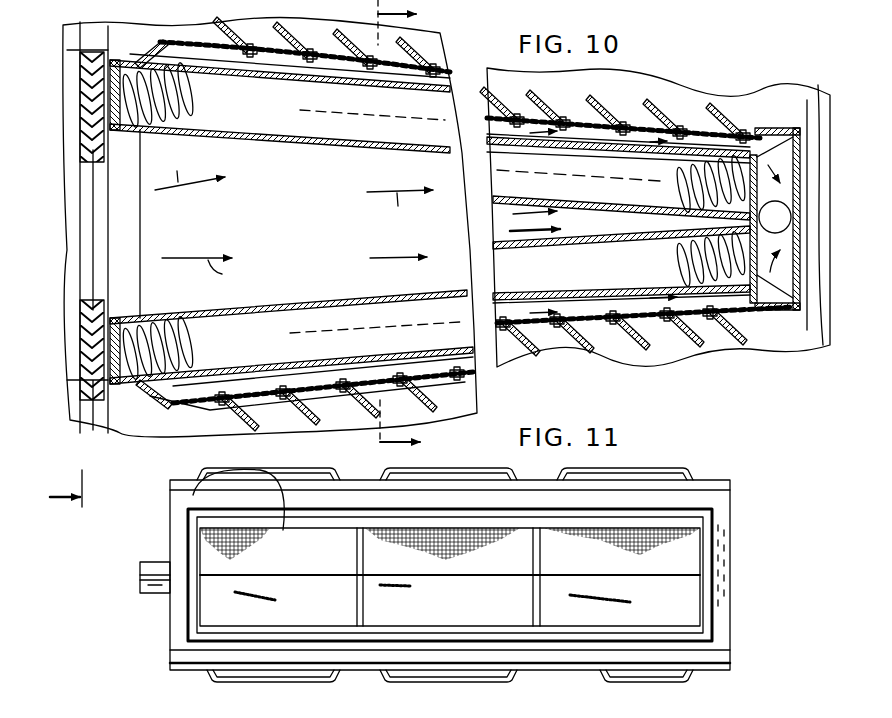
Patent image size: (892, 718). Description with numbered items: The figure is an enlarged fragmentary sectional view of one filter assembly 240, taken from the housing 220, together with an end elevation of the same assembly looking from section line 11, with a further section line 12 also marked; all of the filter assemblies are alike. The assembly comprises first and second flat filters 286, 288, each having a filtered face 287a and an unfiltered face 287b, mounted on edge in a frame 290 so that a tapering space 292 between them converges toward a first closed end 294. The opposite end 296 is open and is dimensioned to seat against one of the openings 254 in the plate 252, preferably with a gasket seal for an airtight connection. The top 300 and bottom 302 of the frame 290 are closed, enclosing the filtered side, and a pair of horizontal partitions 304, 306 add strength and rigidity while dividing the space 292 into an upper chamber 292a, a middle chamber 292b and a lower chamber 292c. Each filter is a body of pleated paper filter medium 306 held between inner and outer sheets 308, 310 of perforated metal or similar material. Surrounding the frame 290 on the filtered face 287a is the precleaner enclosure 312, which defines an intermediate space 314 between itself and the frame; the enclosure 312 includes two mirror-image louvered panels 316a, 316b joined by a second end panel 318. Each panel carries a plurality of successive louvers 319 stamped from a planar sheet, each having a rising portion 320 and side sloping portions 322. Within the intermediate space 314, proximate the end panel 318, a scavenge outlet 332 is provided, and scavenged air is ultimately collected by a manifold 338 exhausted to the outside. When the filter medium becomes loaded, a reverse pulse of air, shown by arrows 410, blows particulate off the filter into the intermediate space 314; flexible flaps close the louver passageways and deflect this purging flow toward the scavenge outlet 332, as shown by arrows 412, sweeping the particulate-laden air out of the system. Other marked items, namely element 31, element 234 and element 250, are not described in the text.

In FIG. 11, the section line 11— 11 is at (70, 503).
In FIG. 10, the section line 12— 12 is at (420, 229).
In FIG. 11, the mounting foot 31 is at (692, 673).
In FIG. 10, the housing 220 is at (686, 353).
In FIG. 10, the housing wall 234 is at (648, 9).
In FIG. 10, the filter assembly 240 is at (757, 240).
In FIG. 11, the filter assembly 240 is at (733, 477).
In FIG. 10, the outer wall 250 is at (808, 205).
In FIG. 10, the plate 252 is at (110, 312).
In FIG. 10, the opening 254 is at (88, 247).
In FIG. 10, the first flat filter 286 is at (337, 150).
In FIG. 10, the filtered face 287a is at (306, 150).
In FIG. 11, the filtered face 287a is at (213, 550).
In FIG. 10, the unfiltered face 287b is at (597, 145).
In FIG. 10, the second flat filter 288 is at (313, 307).
In FIG. 10, the frame 290 is at (760, 128).
In FIG. 10, the tapering space 292 is at (313, 247).
In FIG. 11, the upper chamber 292a is at (680, 550).
In FIG. 11, the middle chamber 292b is at (437, 557).
In FIG. 11, the lower chamber 292c is at (237, 547).
In FIG. 10, the first closed end 294 is at (770, 268).
In FIG. 11, the opposite end 296 is at (180, 522).
In FIG. 11, the top 300 is at (730, 567).
In FIG. 11, the bottom 302 is at (170, 640).
In FIG. 11, the horizontal partition 304 is at (533, 555).
In FIG. 10, the pleated paper filter medium 306 is at (193, 111).
In FIG. 11, the pleated paper filter medium 306 is at (340, 557).
In FIG. 10, the inner sheet 308 is at (433, 150).
In FIG. 10, the outer sheet 310 is at (423, 88).
In FIG. 10, the precleaner enclosure 312 is at (190, 413).
In FIG. 11, the precleaner enclosure 312 is at (705, 473).
In FIG. 10, the intermediate space 314 is at (200, 392).
In FIG. 10, the louvered panel 316a is at (183, 38).
In FIG. 10, the louvered panel 316b is at (163, 402).
In FIG. 10, the second end panel 318 is at (805, 285).
In FIG. 10, the louver 319 is at (285, 38).
In FIG. 11, the louver 319 is at (213, 681).
In FIG. 10, the rising portion 320 is at (527, 107).
In FIG. 11, the rising portion 320 is at (227, 547).
In FIG. 10, the side sloping portion 322 is at (500, 63).
In FIG. 11, the side sloping portion 322 is at (510, 670).
In FIG. 10, the scavenge outlet 332 is at (673, 262).
In FIG. 11, the scavenge outlet 332 is at (140, 587).
In FIG. 10, the manifold 338 is at (87, 417).
In FIG. 10, the arrows 410 is at (294, 222).
In FIG. 10, the arrows 412 is at (773, 313).